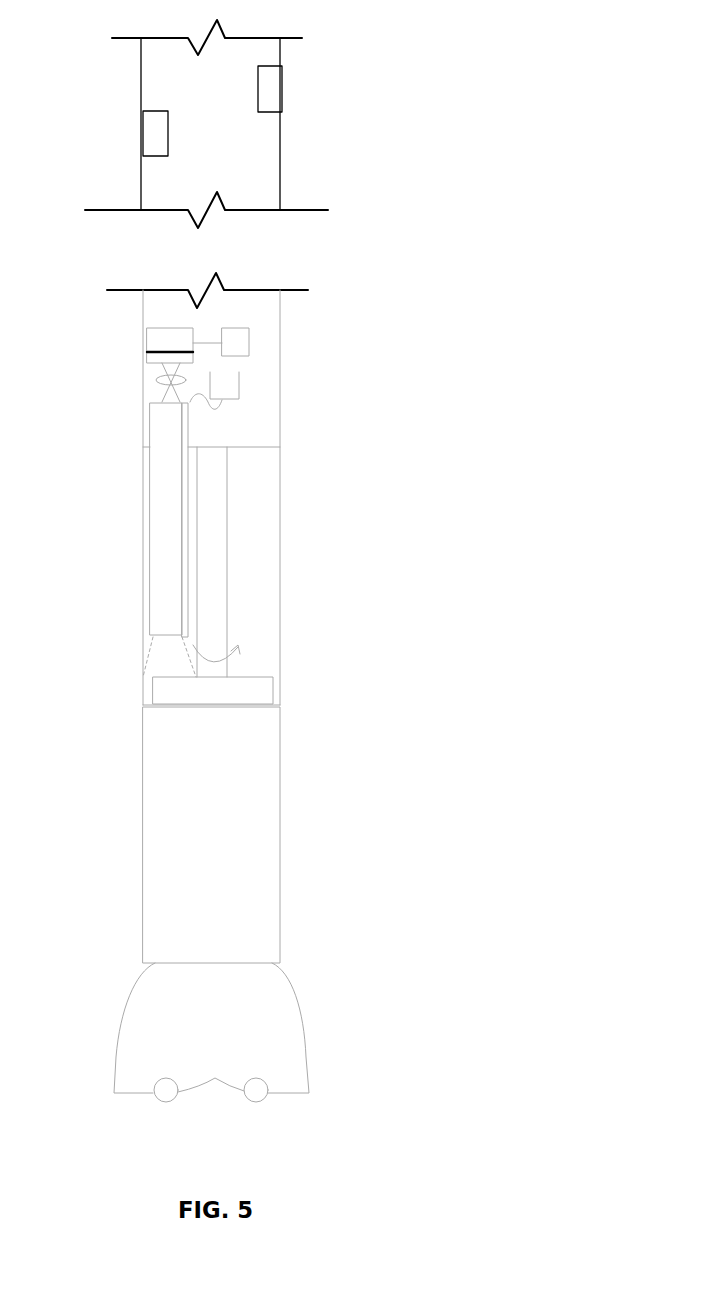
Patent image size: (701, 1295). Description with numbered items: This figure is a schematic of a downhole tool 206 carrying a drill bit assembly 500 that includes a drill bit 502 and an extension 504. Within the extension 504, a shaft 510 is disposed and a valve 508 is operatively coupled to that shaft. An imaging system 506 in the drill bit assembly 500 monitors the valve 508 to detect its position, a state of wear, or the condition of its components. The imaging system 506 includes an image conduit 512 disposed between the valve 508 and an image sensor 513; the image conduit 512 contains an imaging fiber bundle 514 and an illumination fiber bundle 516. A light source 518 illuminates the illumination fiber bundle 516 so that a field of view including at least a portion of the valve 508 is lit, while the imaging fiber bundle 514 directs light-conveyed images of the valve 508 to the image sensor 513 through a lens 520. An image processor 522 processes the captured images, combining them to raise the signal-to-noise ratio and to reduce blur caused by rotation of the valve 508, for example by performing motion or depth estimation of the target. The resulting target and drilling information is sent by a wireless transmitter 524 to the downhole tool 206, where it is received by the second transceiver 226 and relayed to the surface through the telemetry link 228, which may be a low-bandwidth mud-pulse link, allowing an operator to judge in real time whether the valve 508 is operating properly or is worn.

The downhole tool 206 is at (158, 185).
The second transceiver 226 is at (157, 135).
The telemetry link 228 is at (270, 82).
The drill bit assembly 500 is at (395, 288).
The drill bit 502 is at (258, 1028).
The extension 504 is at (280, 610).
The imaging system 506 is at (167, 322).
The valve 508 is at (249, 682).
The shaft 510 is at (218, 547).
The image conduit 512 is at (168, 599).
The image sensor 513 is at (157, 357).
The imaging fiber bundle 514 is at (168, 562).
The illumination fiber bundle 516 is at (155, 513).
The light source 518 is at (232, 379).
The lens 520 is at (162, 382).
The image processor 522 is at (157, 340).
The wireless transmitter 524 is at (238, 342).